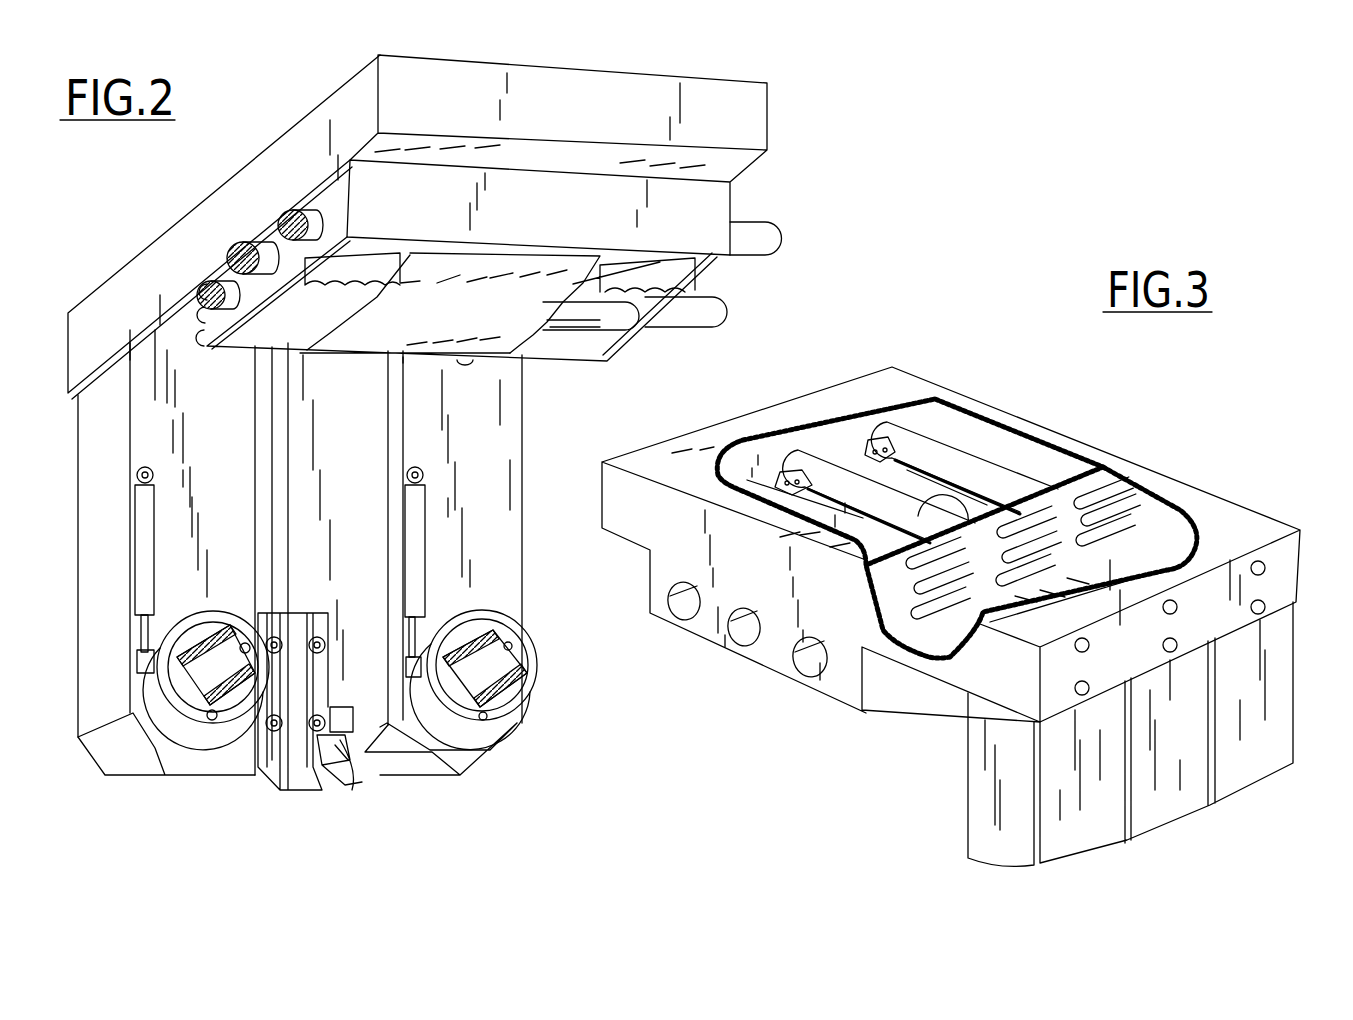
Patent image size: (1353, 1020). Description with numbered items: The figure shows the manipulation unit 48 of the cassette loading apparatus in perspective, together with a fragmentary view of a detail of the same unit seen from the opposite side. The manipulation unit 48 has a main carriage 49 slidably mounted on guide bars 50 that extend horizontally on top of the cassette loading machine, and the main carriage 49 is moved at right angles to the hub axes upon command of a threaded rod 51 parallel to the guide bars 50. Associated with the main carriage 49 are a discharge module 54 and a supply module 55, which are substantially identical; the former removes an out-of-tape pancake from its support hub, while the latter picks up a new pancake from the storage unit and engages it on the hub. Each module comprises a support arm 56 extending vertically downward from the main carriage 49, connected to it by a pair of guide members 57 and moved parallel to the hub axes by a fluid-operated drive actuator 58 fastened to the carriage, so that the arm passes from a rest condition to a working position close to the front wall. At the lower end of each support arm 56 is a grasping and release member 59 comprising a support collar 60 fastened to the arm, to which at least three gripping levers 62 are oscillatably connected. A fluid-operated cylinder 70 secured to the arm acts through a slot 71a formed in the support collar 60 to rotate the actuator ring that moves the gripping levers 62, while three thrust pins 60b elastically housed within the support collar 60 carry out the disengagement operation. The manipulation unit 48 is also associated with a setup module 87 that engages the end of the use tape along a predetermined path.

In FIG. 2, the manipulation unit 48 is at (786, 129).
In FIG. 3, the manipulation unit 48 is at (1187, 463).
In FIG. 2, the main carriage 49 is at (243, 182).
In FIG. 3, the main carriage 49 is at (899, 376).
In FIG. 2, the guide bars 50 is at (287, 208).
In FIG. 2, the threaded rod 51 is at (238, 243).
In FIG. 2, the discharge module 54 is at (525, 413).
In FIG. 3, the discharge module 54 is at (985, 816).
In FIG. 2, the supply module 55 is at (147, 771).
In FIG. 3, the supply module 55 is at (1294, 686).
In FIG. 2, the support arm 56 is at (231, 440).
In FIG. 3, the support arm 56 is at (1067, 764).
In FIG. 3, the guide members 57 is at (1138, 516).
In FIG. 3, the fluid-operated drive actuator 58 is at (866, 548).
In FIG. 2, the grasping and release member 59 is at (210, 727).
In FIG. 2, the support collar 60 is at (158, 703).
In FIG. 2, the thrust pins 60b is at (246, 647).
In FIG. 2, the gripping levers 62 is at (220, 630).
In FIG. 2, the fluid-operated cylinder 70 is at (156, 568).
In FIG. 2, the slot 71a is at (143, 682).
In FIG. 2, the setup module 87 is at (358, 756).